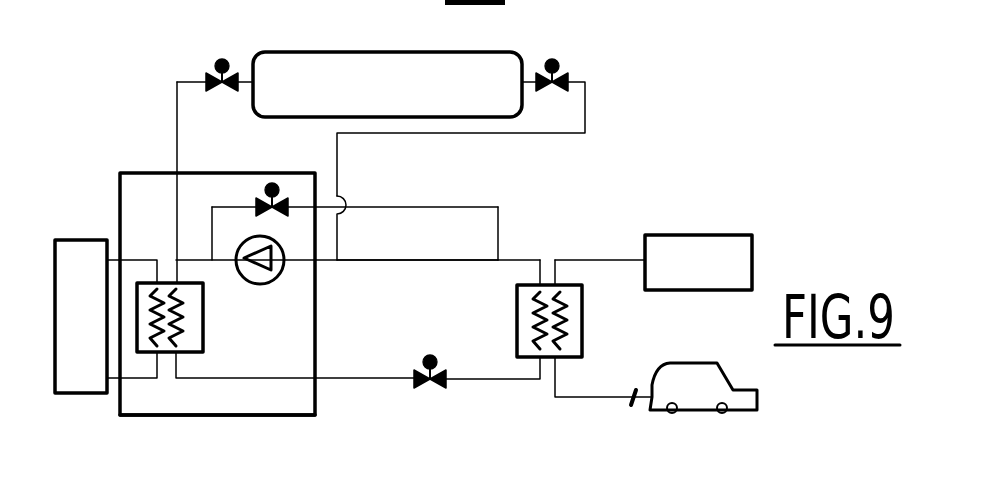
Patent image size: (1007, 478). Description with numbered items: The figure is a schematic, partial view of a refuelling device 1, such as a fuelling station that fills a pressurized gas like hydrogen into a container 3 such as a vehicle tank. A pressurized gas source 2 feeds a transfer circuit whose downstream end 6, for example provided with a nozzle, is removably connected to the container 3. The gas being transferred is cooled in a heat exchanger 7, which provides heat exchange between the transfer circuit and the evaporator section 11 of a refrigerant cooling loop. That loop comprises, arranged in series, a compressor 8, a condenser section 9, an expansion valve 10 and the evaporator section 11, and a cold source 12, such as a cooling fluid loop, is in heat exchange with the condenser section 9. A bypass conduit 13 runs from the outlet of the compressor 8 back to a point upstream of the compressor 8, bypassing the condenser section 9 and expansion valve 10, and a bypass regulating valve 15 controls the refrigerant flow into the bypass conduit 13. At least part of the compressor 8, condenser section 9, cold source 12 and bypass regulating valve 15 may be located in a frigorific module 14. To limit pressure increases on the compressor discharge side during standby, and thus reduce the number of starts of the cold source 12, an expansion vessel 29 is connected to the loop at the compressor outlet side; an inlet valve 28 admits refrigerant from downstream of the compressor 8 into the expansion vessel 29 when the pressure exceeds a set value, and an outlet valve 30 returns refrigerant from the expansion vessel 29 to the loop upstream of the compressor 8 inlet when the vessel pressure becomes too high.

The device 1 is at (170, 418).
The pressurized gas source 2 is at (673, 240).
The container 3 is at (692, 370).
The downstream end 6 is at (631, 405).
The heat exchanger 7 is at (547, 285).
The compressor 8 is at (285, 266).
The condenser section 9 is at (203, 283).
The expansion valve 10 is at (428, 392).
The evaporator section 11 is at (520, 333).
The cold source 12 is at (90, 390).
The bypass conduit 13 is at (397, 207).
The frigorific module 14 is at (121, 192).
The bypass regulating valve 15 is at (285, 196).
The inlet valve 28 is at (226, 53).
The expansion vessel 29 is at (287, 50).
The outlet valve 30 is at (581, 65).